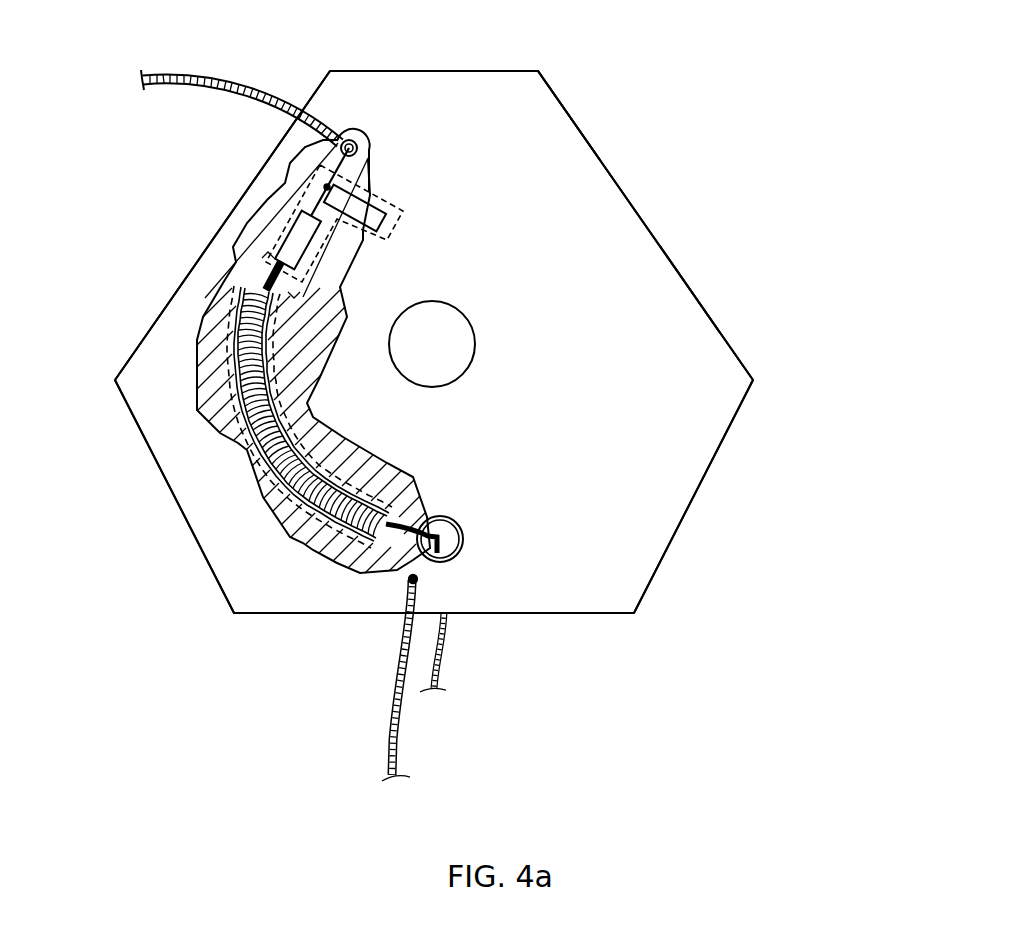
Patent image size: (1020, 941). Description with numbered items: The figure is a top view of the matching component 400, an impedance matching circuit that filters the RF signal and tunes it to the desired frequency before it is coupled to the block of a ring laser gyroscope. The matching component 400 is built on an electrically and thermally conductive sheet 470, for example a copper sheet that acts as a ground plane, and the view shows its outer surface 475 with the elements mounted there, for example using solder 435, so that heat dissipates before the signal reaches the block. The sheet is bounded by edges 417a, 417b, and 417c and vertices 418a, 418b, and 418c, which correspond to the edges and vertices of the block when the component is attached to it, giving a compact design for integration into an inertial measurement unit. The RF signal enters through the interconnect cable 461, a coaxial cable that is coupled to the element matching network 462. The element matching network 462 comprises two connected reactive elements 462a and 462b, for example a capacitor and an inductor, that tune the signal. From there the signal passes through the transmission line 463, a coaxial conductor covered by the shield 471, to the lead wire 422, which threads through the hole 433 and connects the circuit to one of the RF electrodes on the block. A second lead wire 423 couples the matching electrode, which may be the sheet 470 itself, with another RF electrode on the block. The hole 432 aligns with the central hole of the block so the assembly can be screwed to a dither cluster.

The matching component 400 is at (723, 124).
The electrically and thermally conductive sheet 470 is at (540, 72).
The outer surface 475 is at (683, 293).
The edge 417a is at (735, 353).
The edge 417b is at (151, 327).
The edge 417c is at (338, 614).
The vertex 418a is at (687, 508).
The vertex 418b is at (463, 71).
The vertex 418c is at (124, 407).
The hole 432 is at (440, 344).
The hole 433 is at (460, 556).
The solder 435 is at (303, 545).
The transmission line 463 is at (238, 441).
The interconnect cable 461 is at (239, 78).
The element matching network 462 is at (278, 228).
The reactive element 462a is at (338, 170).
The reactive element 462b is at (282, 256).
The shield 471 is at (253, 285).
The lead wire 422 is at (436, 672).
The lead wire 423 is at (398, 745).